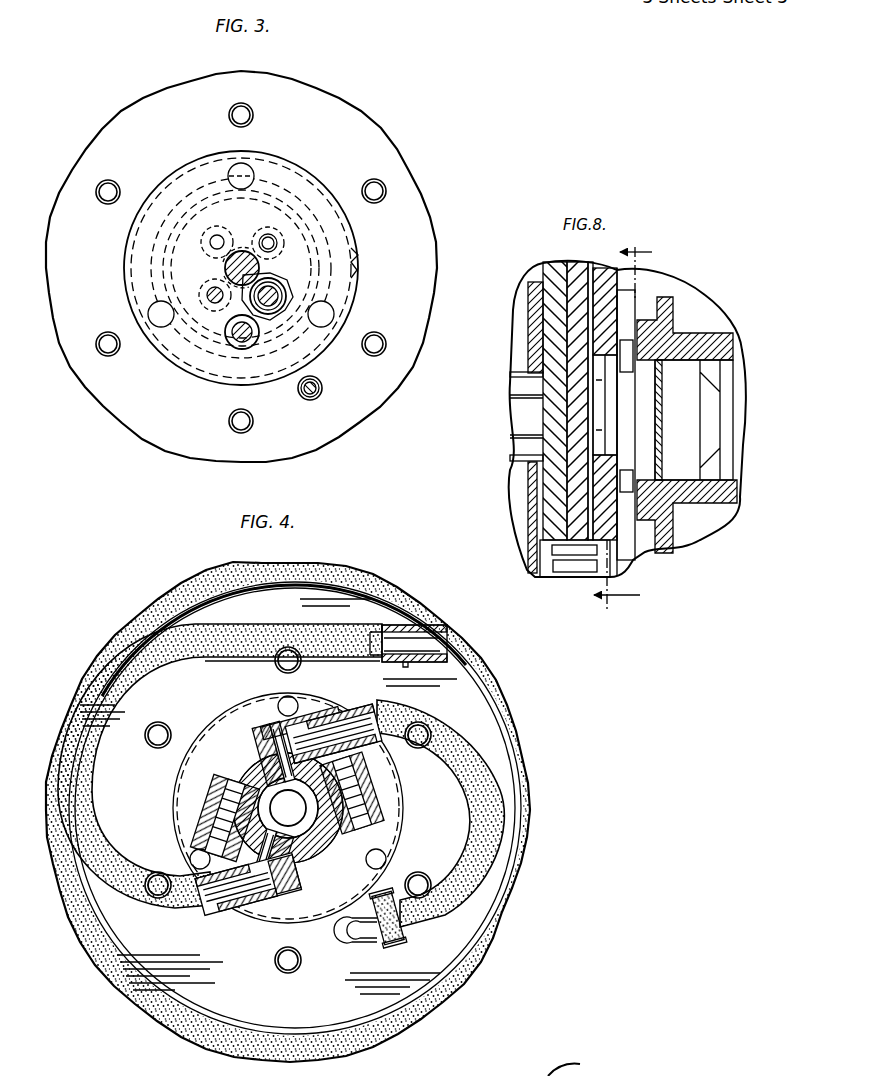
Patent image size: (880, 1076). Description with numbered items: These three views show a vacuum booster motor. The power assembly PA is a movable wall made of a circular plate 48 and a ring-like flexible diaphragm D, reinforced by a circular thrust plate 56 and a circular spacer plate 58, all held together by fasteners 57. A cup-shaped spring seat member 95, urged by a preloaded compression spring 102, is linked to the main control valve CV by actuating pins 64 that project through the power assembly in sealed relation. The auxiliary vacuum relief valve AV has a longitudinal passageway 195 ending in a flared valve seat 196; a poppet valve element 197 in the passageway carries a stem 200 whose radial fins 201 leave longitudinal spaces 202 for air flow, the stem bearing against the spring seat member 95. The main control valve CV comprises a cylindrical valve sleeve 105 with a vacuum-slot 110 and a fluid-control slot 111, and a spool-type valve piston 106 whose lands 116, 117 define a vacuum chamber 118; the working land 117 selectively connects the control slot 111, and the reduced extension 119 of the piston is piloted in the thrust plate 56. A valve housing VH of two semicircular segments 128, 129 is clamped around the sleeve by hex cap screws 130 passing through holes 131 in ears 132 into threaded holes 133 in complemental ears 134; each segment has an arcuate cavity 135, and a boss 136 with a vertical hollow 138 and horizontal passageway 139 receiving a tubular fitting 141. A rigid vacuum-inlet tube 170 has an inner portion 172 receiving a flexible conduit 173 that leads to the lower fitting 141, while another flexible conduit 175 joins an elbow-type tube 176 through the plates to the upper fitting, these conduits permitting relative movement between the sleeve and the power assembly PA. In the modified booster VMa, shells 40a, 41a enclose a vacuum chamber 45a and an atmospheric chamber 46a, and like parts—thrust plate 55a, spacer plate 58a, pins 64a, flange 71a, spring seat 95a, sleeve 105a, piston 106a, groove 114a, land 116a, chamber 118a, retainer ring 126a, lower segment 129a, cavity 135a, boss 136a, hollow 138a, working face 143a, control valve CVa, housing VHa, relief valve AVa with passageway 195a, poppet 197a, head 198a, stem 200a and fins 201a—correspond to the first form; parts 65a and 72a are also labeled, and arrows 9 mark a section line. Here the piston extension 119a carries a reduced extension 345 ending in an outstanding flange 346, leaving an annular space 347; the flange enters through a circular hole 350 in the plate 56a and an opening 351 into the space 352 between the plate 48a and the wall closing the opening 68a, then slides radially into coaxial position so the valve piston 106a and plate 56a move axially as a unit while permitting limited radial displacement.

In FIG. 3, the power member assembly PA is at (101, 129).
In FIG. 4, the power member assembly PA is at (138, 611).
In FIG. 3, the circular plate 48 is at (385, 148).
In FIG. 4, the circular plate 48 is at (150, 967).
In FIG. 3, the circular thrust plate 56 is at (290, 165).
In FIG. 4, the circular thrust plate 56 is at (177, 907).
In FIG. 3, the spring seat member 95 is at (210, 173).
In FIG. 3, the compression spring 102 is at (205, 195).
In FIG. 3, the fasteners 57 is at (334, 315).
In FIG. 4, the fasteners 57 is at (292, 700).
In FIG. 3, the circular spacer plate 58 is at (358, 258).
In FIG. 4, the circular spacer plate 58 is at (204, 738).
In FIG. 3, the actuating pins 64 is at (286, 296).
In FIG. 3, the cylindrical extension 119 is at (226, 267).
In FIG. 3, the longitudinal circular passageway 195 is at (236, 329).
In FIG. 3, the valve seat 196 is at (228, 341).
In FIG. 3, the poppet-type valve element 197 is at (236, 345).
In FIG. 3, the stem 200 is at (250, 358).
In FIG. 3, the fins 201 is at (256, 338).
In FIG. 3, the longitudinal spaces 202 is at (242, 343).
In FIG. 3, the auxiliary vacuum relief control valve AV is at (246, 364).
In FIG. 3, the elbow-type tube 176 is at (323, 389).
In FIG. 4, the elbow-type tube 176 is at (357, 933).
In FIG. 4, the inner projecting portion 172 is at (389, 637).
In FIG. 4, the flexible conduit 173 is at (250, 625).
In FIG. 4, the flexible conduit 175 is at (463, 910).
In FIG. 8, the vacuum-inlet tube 170 is at (460, 598).
In FIG. 4, the vacuum-inlet tube 170 is at (441, 628).
In FIG. 4, the vertical passageway 138 is at (254, 760).
In FIG. 4, the horizontal passageway 139 is at (273, 752).
In FIG. 4, the embossment 136 is at (318, 717).
In FIG. 4, the tubular fitting 141 is at (352, 712).
In FIG. 4, the valve housing VH is at (246, 738).
In FIG. 4, the upper semicircular segment 128 is at (183, 712).
In FIG. 4, the arcuate cavity 135 is at (240, 775).
In FIG. 4, the fluid-control slot 111 is at (250, 790).
In FIG. 4, the hex cap screws 130 is at (202, 800).
In FIG. 4, the holes 131 is at (200, 812).
In FIG. 4, the flanges or ears 132 is at (205, 825).
In FIG. 4, the threaded holes 133 is at (210, 838).
In FIG. 4, the complemental flanges or ears 134 is at (215, 850).
In FIG. 4, the working land 117 is at (358, 751).
In FIG. 4, the main control valve means CV is at (352, 836).
In FIG. 4, the valve piston 106 is at (334, 839).
In FIG. 4, the vacuum-slot 110 is at (303, 834).
In FIG. 4, the lower semicircular segment 129 is at (333, 904).
In FIG. 4, the vacuum chamber 118 is at (308, 914).
In FIG. 4, the valve sleeve 105 is at (237, 882).
In FIG. 4, the annular land 116 is at (277, 872).
In FIG. 4, the flexible diaphragm D is at (522, 763).
In FIG. 8, the circular spacer plate 58a is at (548, 262).
In FIG. 8, the power diaphragm plate 56a is at (589, 262).
In FIG. 8, the section line 9- 9 is at (633, 426).
In FIG. 8, the embossment 136a is at (652, 308).
In FIG. 8, the constant pressure chamber 46a is at (640, 281).
In FIG. 8, the circular thrust plate 55a is at (545, 291).
In FIG. 8, the spring seat member 95a is at (531, 315).
In FIG. 8, the variable pressure chamber 45a is at (520, 330).
In FIG. 8, the circular working face 143a is at (676, 335).
In FIG. 8, the arcuate cavity 135a is at (700, 340).
In FIG. 8, the main control valve CVa is at (737, 330).
In FIG. 8, the space 352 is at (575, 365).
In FIG. 8, the vacuum booster VMa is at (512, 355).
In FIG. 8, the valve sleeve 105a is at (738, 345).
In FIG. 8, the cup-shaped shell 40a is at (452, 375).
In FIG. 8, the annular space 347 is at (560, 380).
In FIG. 8, the vacuum chamber 118a is at (720, 375).
In FIG. 8, the central circular opening 68a is at (656, 372).
In FIG. 8, the reduced diameter circular extension 345 is at (562, 400).
In FIG. 8, the control valve piston 106a is at (694, 420).
In FIG. 8, the annular land 116a is at (715, 400).
In FIG. 8, the circular plate 48a is at (600, 410).
In FIG. 8, the cylindrical extension 119a is at (683, 418).
In FIG. 8, the annular flange 71a is at (540, 425).
In FIG. 8, the seal 72a is at (580, 430).
In FIG. 8, the circular hole 350 is at (630, 460).
In FIG. 8, the split retainer ring 126a is at (680, 438).
In FIG. 8, the cup-shaped shell 41a is at (745, 435).
In FIG. 8, the annular outstanding flange 346 is at (560, 450).
In FIG. 8, the bearing 65a is at (550, 475).
In FIG. 8, the internal annular groove 114a is at (720, 480).
In FIG. 8, the opening 351 is at (560, 490).
In FIG. 8, the longitudinal circular passageway 195a is at (560, 520).
In FIG. 8, the poppet-type valve element 197a is at (555, 545).
In FIG. 8, the vertical passageway 138a is at (745, 545).
In FIG. 8, the lower semicircular segment 129a is at (691, 551).
In FIG. 8, the actuating pins 64a is at (646, 546).
In FIG. 8, the valve housing VHa is at (700, 580).
In FIG. 8, the auxiliary vacuum relief control valve AVa is at (526, 570).
In FIG. 8, the stem 200a is at (545, 572).
In FIG. 8, the fins 201a is at (580, 573).
In FIG. 8, the head 198a is at (683, 598).